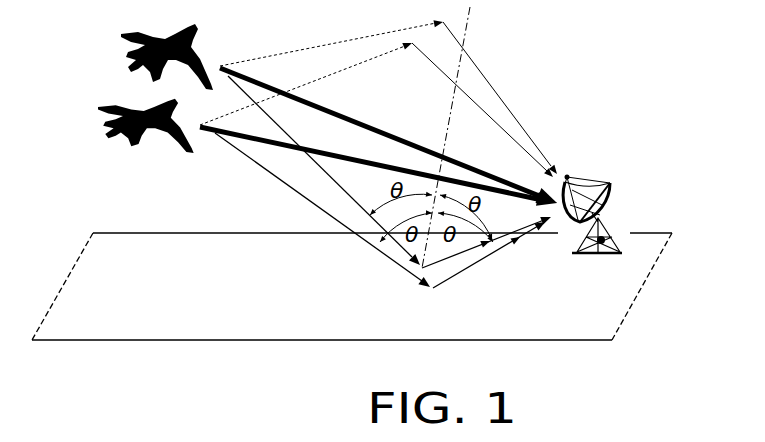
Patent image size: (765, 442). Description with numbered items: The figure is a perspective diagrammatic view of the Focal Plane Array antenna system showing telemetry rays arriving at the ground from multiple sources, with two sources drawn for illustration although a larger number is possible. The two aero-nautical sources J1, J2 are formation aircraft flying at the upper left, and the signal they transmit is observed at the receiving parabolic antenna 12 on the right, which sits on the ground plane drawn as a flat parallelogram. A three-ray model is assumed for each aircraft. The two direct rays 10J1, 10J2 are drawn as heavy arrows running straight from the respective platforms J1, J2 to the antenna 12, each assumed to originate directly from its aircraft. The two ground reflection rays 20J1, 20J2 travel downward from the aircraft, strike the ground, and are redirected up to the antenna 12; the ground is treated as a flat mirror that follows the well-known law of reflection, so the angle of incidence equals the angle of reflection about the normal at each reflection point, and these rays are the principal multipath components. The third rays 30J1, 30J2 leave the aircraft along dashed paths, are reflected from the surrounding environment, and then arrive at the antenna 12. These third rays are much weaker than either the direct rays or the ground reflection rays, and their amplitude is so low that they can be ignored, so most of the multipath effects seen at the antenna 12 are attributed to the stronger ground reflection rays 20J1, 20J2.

The aero-nautical source J1 is at (167, 48).
The aero-nautical source J2 is at (146, 116).
The direct ray 10J1 is at (348, 114).
The direct ray 10J2 is at (386, 162).
The ground reflection ray 20J1 is at (482, 245).
The ground reflection ray 20J2 is at (502, 244).
The third ray 30J1 is at (512, 113).
The third ray 30J2 is at (477, 103).
The receiving parabolic antenna 12 is at (604, 209).